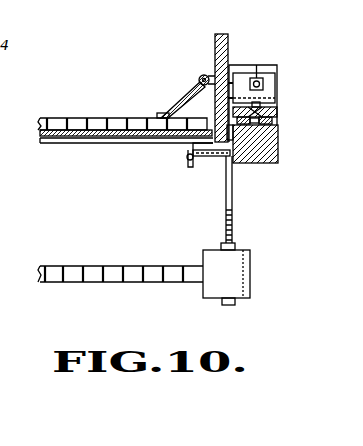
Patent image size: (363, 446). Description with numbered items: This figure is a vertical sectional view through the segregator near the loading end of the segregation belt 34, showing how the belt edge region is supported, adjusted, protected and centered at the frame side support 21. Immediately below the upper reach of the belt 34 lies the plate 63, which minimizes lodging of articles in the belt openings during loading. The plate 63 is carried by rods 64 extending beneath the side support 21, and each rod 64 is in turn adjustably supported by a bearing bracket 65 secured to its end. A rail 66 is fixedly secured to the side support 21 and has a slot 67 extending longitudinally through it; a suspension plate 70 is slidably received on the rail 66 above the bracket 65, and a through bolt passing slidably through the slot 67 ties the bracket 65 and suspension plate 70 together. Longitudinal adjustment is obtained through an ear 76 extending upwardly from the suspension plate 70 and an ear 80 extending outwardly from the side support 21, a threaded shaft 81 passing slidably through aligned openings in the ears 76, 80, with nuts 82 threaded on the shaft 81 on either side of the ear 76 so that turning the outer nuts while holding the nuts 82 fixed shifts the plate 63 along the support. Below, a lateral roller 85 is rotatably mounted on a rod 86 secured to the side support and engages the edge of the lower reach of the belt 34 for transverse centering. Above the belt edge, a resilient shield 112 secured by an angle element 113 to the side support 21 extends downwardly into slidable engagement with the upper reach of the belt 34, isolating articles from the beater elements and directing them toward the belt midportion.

The side support 21 is at (217, 52).
The belt 34 is at (112, 278).
The plate 63 is at (113, 139).
The rod 64 is at (205, 157).
The bearing bracket 65 is at (280, 141).
The rail 66 is at (273, 119).
The slot 67 is at (280, 106).
The suspension plate 70 is at (290, 111).
The ear 76 is at (278, 80).
The ear 80 is at (263, 65).
The threaded shaft 81 is at (262, 99).
The nut 82 is at (255, 78).
The lateral roller 85 is at (252, 277).
The rod 86 is at (233, 208).
The shield 112 is at (186, 94).
The angle element 113 is at (199, 78).